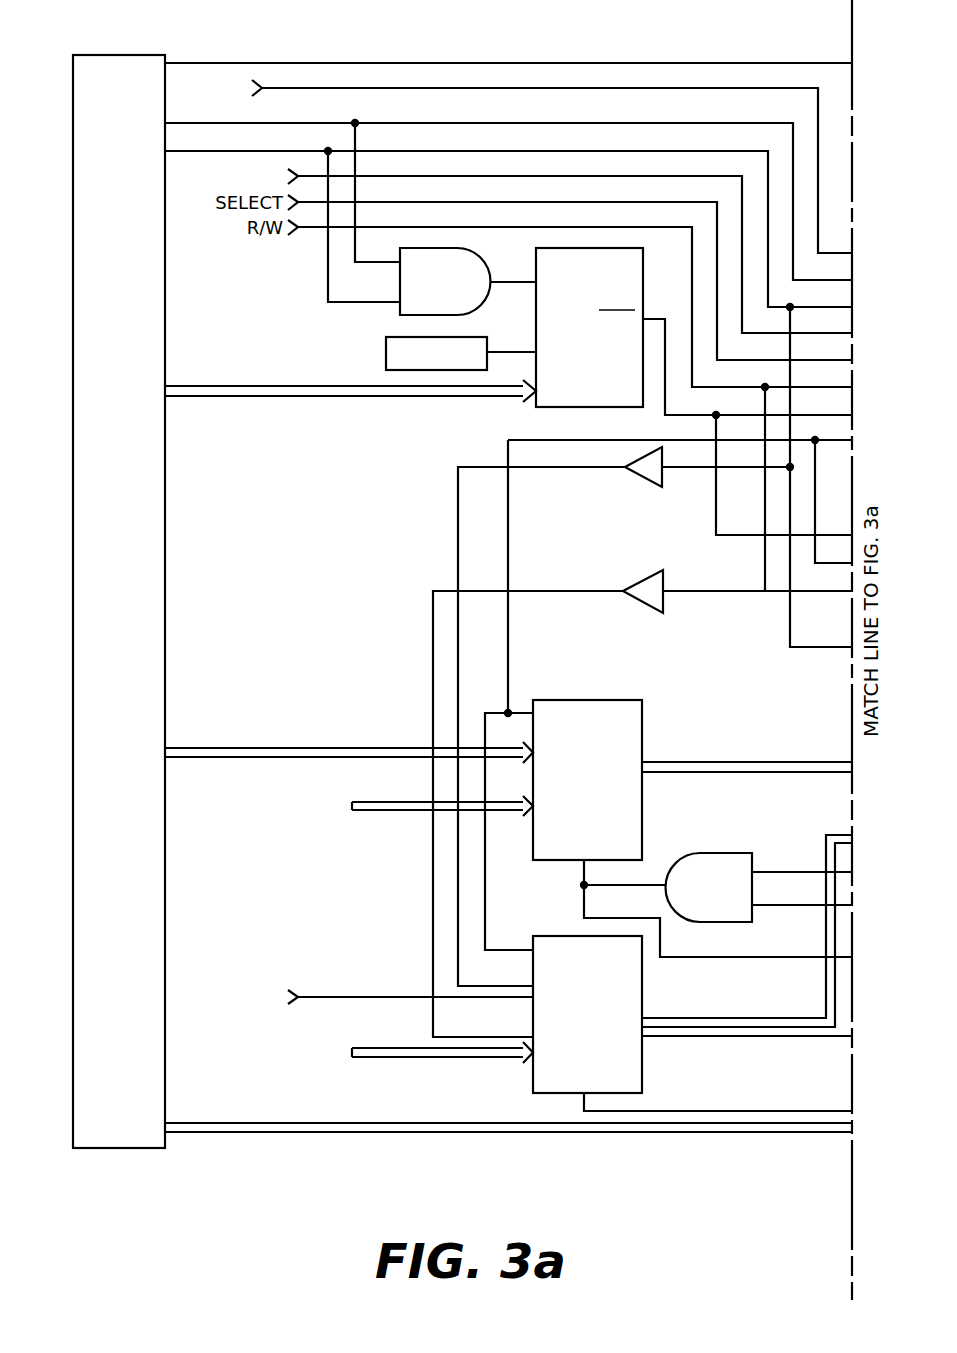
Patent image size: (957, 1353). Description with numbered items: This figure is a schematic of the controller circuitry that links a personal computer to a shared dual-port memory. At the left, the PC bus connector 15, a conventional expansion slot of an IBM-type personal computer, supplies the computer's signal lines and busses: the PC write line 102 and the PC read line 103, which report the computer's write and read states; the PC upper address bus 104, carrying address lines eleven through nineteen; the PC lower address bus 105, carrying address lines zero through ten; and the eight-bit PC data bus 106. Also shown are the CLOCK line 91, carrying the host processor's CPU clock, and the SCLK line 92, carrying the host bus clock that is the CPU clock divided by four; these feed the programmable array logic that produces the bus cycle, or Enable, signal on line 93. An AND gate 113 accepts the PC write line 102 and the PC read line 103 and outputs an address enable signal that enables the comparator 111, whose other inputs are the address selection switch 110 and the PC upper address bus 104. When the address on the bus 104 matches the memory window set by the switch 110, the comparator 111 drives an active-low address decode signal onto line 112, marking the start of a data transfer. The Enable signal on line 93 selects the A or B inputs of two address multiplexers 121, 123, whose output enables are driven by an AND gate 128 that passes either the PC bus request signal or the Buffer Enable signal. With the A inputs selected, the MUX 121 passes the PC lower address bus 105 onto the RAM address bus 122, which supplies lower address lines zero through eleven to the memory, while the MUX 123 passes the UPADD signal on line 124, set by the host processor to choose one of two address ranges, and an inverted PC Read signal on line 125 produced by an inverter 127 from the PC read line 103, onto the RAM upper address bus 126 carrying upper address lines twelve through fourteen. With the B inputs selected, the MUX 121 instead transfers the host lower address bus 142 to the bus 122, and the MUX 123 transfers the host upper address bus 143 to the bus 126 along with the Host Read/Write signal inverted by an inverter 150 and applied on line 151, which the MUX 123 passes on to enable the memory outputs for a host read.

The PC bus connector 15 is at (166, 645).
The CLOCK line 91 is at (434, 88).
The SCLK line 92 is at (383, 176).
The Enable line 93 is at (508, 440).
The PC write line 102 is at (418, 123).
The PC read line 103 is at (400, 151).
The PC upper address bus 104 is at (220, 386).
The PC lower address bus 105 is at (340, 757).
The PC data bus 106 is at (370, 1134).
The address selection switch 110 is at (386, 352).
The comparator 111 is at (643, 289).
The address decode line 112 is at (662, 418).
The AND gate 113 is at (400, 285).
The address multiplexer 121 is at (582, 700).
The RAM address bus 122 is at (675, 775).
The address multiplexer 123 is at (565, 936).
The UPADD signal line 124 is at (385, 996).
The inverted PC Read signal line 125 is at (522, 986).
The RAM upper address bus 126 is at (826, 946).
The inverter 127 is at (640, 489).
The AND gate 128 is at (715, 853).
The host lower address bus 142 is at (425, 812).
The host upper address bus 143 is at (455, 1060).
The inverter 150 is at (640, 572).
The inverted Host Read/Write line 151 is at (433, 1020).